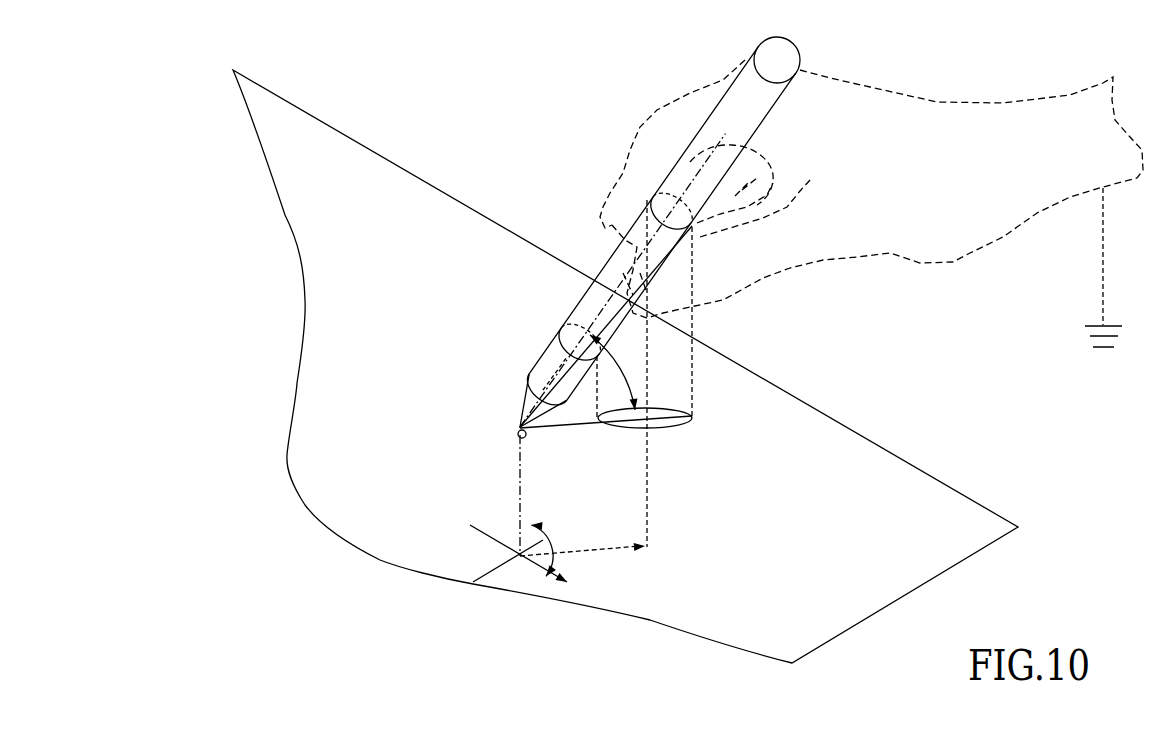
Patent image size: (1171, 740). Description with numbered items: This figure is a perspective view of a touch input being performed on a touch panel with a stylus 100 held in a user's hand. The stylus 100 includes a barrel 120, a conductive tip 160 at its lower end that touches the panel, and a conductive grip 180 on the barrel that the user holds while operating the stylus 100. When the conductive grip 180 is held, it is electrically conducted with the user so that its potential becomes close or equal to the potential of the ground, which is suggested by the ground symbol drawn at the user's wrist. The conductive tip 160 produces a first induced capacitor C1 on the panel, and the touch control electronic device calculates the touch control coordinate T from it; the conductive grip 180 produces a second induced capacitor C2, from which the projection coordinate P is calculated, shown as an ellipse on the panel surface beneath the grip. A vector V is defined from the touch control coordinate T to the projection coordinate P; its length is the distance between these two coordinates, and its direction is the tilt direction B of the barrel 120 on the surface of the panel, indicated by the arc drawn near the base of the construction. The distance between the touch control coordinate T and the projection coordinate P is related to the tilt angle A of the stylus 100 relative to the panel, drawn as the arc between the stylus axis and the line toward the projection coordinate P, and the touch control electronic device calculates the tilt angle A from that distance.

The stylus 100 is at (744, 58).
The barrel 120 is at (547, 343).
The conductive tip 160 is at (527, 393).
The conductive grip 180 is at (630, 253).
The touch control coordinate T is at (530, 440).
The vector V is at (585, 428).
The projection coordinate P is at (658, 425).
The tilt angle A is at (614, 372).
The tilt direction B is at (554, 549).
The first induced capacitor C1 is at (517, 427).
The second induced capacitor C2 is at (695, 414).